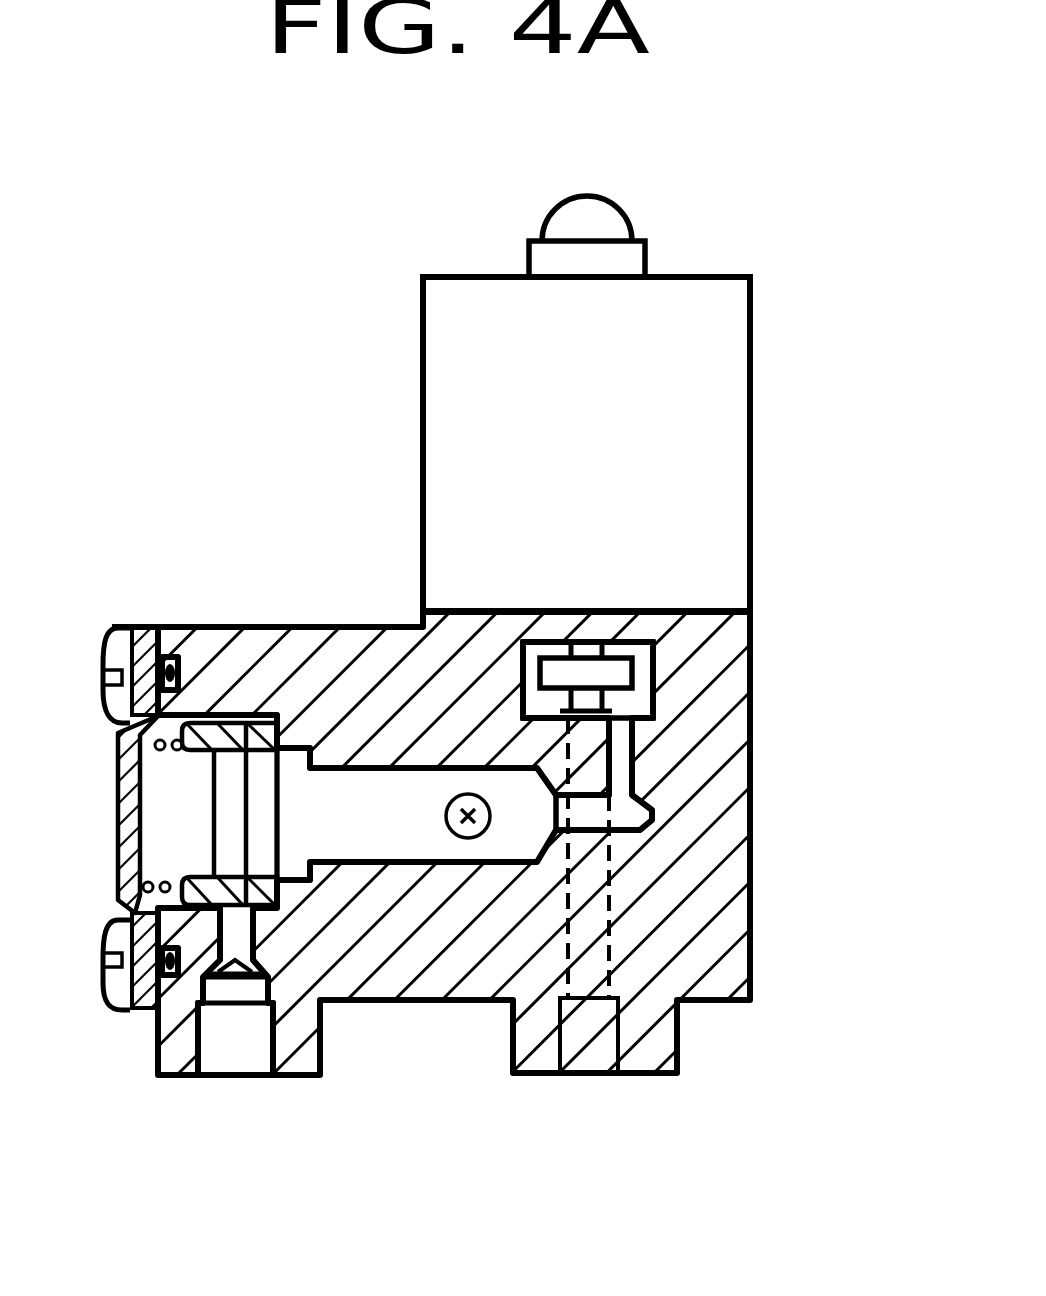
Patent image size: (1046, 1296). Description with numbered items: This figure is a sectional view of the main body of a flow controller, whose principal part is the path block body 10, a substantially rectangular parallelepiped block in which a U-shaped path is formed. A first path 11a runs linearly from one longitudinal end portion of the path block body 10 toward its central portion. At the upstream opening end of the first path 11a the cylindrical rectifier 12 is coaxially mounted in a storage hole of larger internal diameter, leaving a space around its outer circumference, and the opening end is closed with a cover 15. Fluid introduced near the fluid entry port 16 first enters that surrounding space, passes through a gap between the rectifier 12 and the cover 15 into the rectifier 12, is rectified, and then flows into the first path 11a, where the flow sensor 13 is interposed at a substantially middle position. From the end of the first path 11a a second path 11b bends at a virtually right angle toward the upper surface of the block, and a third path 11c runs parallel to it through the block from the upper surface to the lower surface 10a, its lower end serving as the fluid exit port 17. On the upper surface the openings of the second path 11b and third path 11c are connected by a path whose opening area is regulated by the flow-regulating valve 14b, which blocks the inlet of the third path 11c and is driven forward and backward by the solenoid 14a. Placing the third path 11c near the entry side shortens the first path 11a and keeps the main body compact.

The path block body 10 is at (202, 624).
The lower surface 10a is at (418, 1006).
The first path 11a is at (355, 790).
The second path 11b is at (622, 752).
The third path 11c is at (592, 907).
The rectifier 12 is at (243, 800).
The flow sensor 13 is at (462, 794).
The solenoid 14a is at (723, 370).
The flow-regulating valve 14b is at (615, 670).
The cover 15 is at (118, 872).
The fluid entry port 16 is at (236, 1040).
The fluid exit port 17 is at (594, 1048).